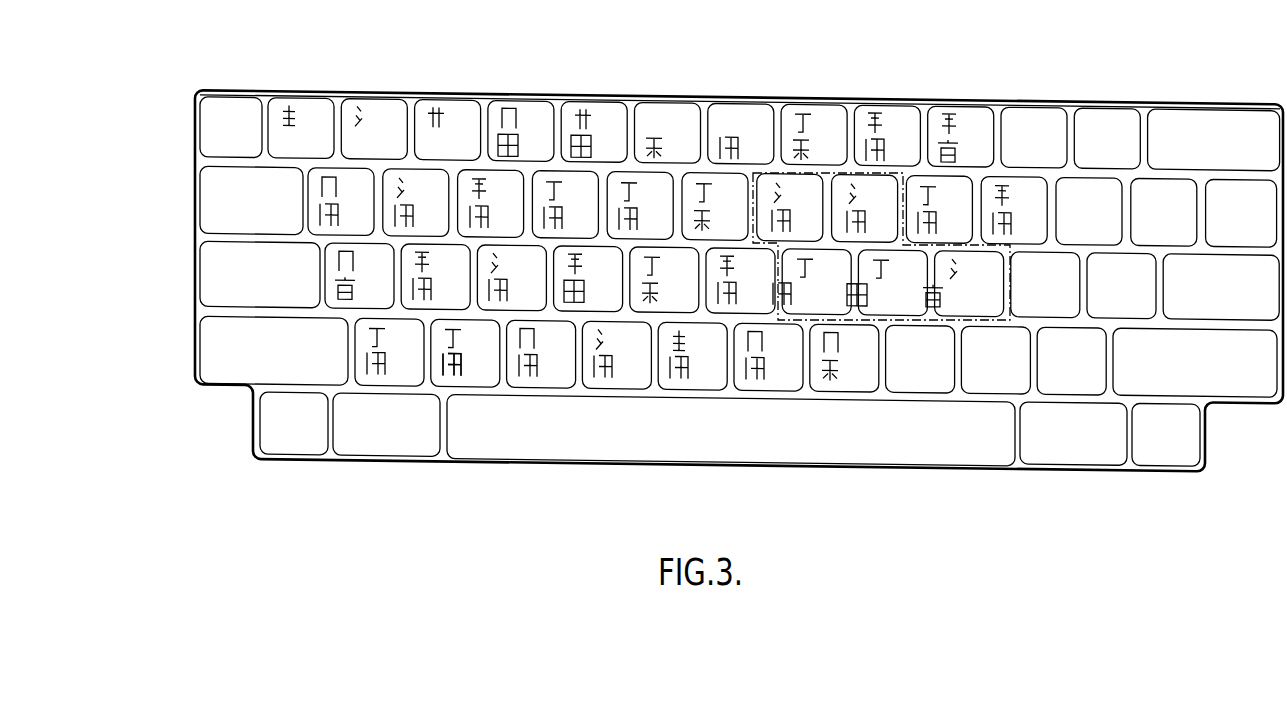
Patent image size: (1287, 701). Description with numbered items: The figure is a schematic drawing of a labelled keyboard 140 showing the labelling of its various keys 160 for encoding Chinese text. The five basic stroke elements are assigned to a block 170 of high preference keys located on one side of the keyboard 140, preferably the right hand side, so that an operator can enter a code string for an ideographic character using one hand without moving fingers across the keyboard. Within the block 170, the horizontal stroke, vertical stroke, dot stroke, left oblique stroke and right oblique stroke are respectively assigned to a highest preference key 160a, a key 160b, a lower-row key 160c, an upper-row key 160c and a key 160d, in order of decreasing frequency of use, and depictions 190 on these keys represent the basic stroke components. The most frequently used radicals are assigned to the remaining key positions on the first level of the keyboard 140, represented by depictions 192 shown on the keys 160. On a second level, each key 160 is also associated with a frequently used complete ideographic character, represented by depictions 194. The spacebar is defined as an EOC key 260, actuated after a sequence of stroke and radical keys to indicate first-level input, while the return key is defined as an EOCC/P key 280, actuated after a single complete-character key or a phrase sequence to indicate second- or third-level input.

The keyboard 140 is at (1050, 96).
The keys 160 is at (565, 97).
The highest preference key 160a is at (811, 313).
The key 160b is at (886, 318).
The key 160c is at (778, 172).
The key 160d is at (850, 176).
The block of high preference keys 170 is at (877, 269).
The depictions 190 is at (783, 190).
The depictions 192 is at (420, 112).
The depictions 194 is at (718, 143).
The EOC key 260 is at (720, 437).
The EOCC/P key 280 is at (1203, 320).